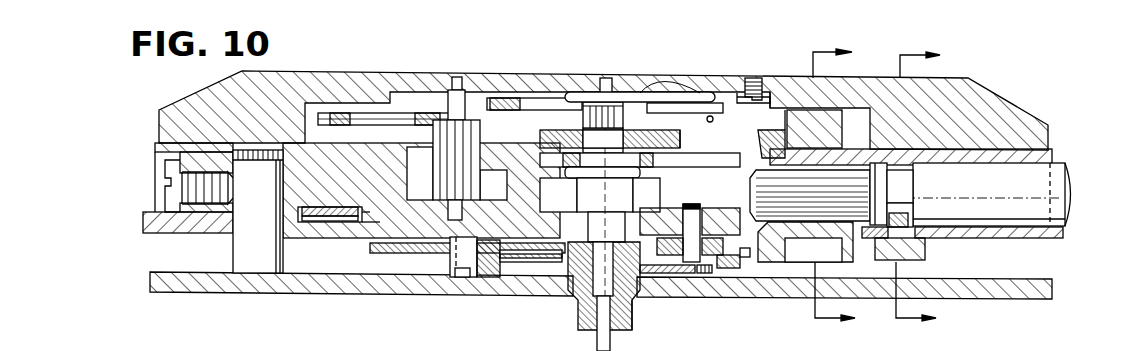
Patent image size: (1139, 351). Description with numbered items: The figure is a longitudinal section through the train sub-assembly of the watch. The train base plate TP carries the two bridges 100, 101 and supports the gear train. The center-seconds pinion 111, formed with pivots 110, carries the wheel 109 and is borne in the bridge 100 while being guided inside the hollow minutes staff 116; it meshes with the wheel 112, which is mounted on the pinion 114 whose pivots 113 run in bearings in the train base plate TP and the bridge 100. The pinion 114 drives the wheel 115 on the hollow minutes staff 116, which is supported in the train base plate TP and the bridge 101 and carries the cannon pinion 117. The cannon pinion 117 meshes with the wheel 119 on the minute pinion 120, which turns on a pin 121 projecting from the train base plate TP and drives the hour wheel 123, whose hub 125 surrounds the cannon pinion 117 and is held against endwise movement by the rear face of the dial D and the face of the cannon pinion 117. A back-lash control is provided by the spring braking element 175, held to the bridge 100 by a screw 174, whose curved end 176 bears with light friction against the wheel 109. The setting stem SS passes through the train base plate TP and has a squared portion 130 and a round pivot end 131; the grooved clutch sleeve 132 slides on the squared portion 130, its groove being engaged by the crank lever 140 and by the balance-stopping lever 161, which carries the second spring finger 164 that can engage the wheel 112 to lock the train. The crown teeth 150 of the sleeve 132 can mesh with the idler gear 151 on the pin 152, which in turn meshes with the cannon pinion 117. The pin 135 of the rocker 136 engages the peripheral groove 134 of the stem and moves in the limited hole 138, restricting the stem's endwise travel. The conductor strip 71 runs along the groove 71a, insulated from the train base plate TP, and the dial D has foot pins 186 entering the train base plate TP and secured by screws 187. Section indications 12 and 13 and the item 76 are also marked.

The bridge 100 is at (328, 70).
The dial D is at (158, 276).
The train base plate TP is at (158, 222).
The screw 187 is at (168, 172).
The foot pin 186 is at (252, 244).
The conductor strip 71 is at (312, 222).
The strip 76 is at (345, 222).
The groove 71a is at (362, 226).
The wheel 119 is at (385, 256).
The wheel 112 is at (330, 126).
The pinion 114 is at (440, 128).
The wheel 109 is at (505, 98).
The pivots 113 is at (458, 76).
The minute pinion 120 is at (460, 278).
The pin 121 is at (478, 280).
The hour wheel 123 is at (518, 265).
The hollow minutes staff 116 is at (585, 186).
The cannon pinion 117 is at (597, 340).
The hub 125 is at (633, 310).
The pivots 110 is at (607, 78).
The curved end 176 is at (580, 94).
The spring braking element 175 is at (655, 104).
The center-seconds pinion 111 is at (677, 73).
The wheel 115 is at (698, 150).
The bridge 101 is at (676, 132).
The second spring finger 164 is at (723, 96).
The screw 174 is at (768, 98).
The balance-stopping lever 161 is at (828, 112).
The crown teeth 150 is at (765, 158).
The clutch sleeve 132 is at (774, 134).
The pin 152 is at (700, 195).
The idler gear 151 is at (728, 290).
The crank lever 140 is at (803, 258).
The squared portion 130 is at (818, 194).
The round pivot end 131 is at (768, 192).
The peripheral groove 134 is at (918, 185).
The pin 135 is at (912, 214).
The setting stem SS is at (1062, 190).
The hole 138 is at (935, 236).
The rocker 136 is at (920, 258).
The section line 13 is at (850, 183).
The section line 12 is at (934, 187).